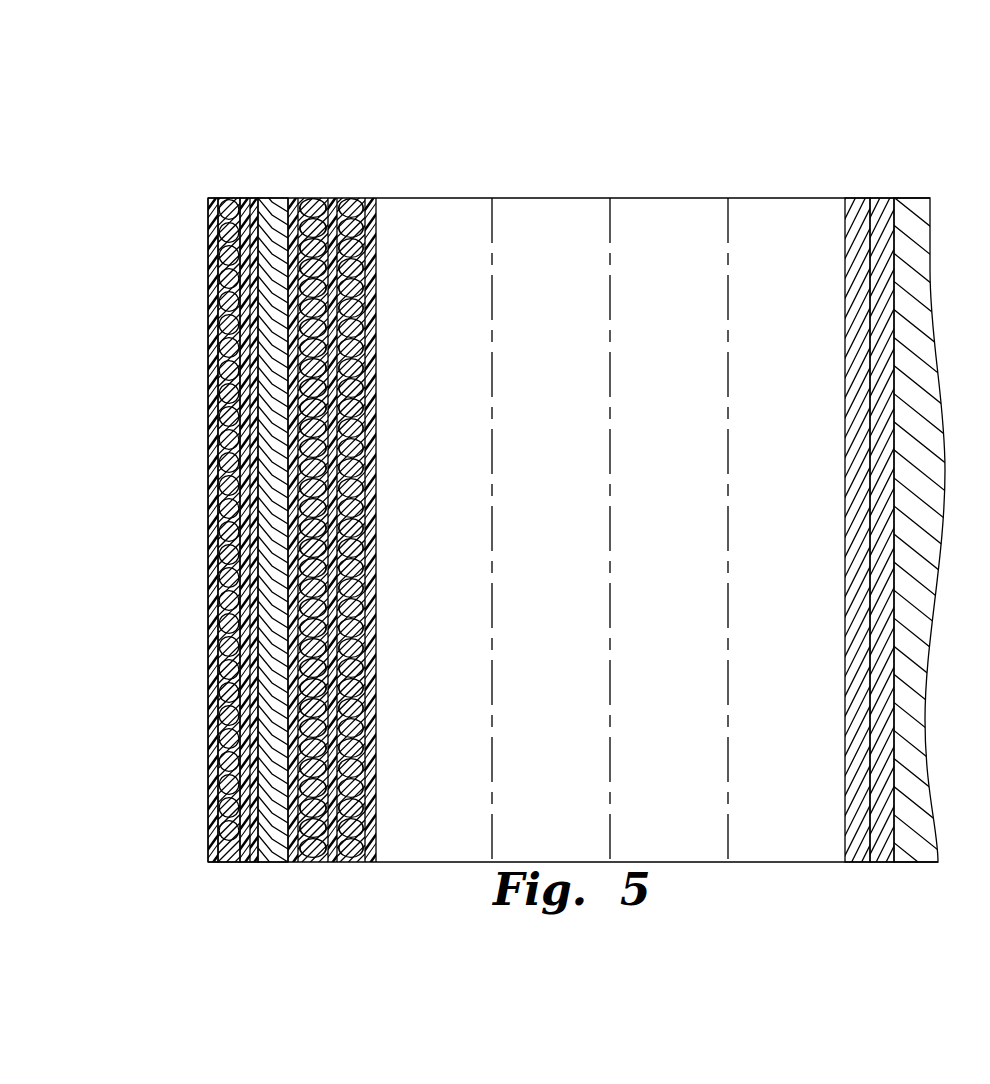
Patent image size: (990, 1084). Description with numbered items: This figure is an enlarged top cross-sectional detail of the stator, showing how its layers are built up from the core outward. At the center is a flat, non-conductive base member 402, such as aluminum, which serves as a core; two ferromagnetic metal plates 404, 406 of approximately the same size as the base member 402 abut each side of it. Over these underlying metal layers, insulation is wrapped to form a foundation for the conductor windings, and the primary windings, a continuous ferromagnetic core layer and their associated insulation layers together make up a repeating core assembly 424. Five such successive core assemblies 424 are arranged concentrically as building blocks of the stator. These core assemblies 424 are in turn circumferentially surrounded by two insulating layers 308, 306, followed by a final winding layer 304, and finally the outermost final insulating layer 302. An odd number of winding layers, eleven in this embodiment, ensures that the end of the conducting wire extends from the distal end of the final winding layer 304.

The final insulating layer 302 is at (208, 198).
The final winding layer 304 is at (229, 198).
The insulating layer 306 is at (244, 198).
The insulating layer 308 is at (253, 198).
The repeating core assembly 424 is at (845, 193).
The ferromagnetic metal plate 406 is at (857, 198).
The ferromagnetic metal plate 404 is at (882, 198).
The base member 402 is at (910, 198).